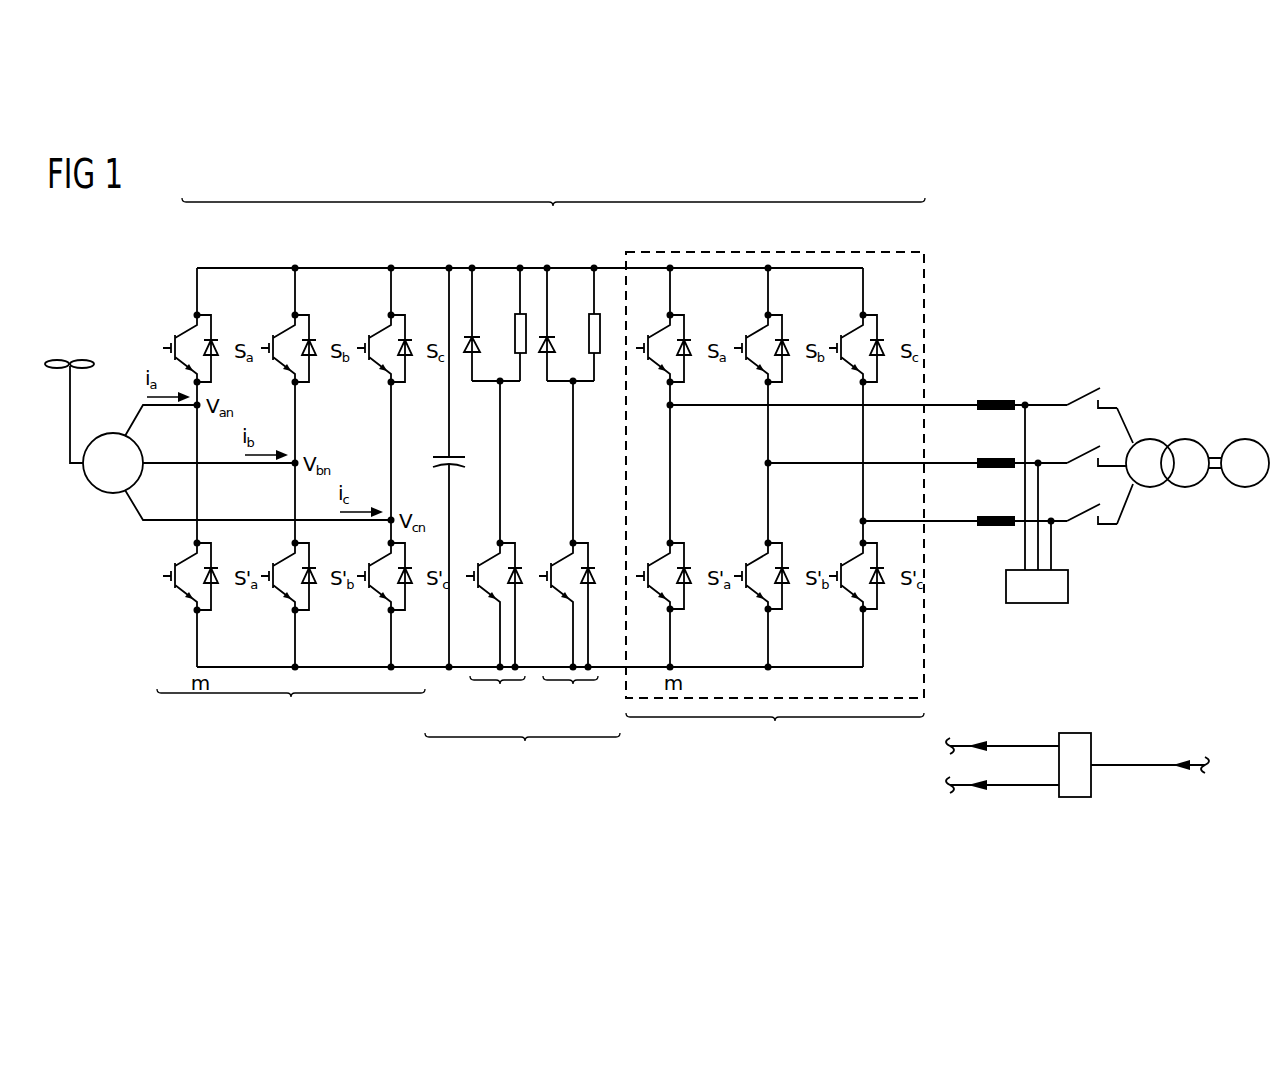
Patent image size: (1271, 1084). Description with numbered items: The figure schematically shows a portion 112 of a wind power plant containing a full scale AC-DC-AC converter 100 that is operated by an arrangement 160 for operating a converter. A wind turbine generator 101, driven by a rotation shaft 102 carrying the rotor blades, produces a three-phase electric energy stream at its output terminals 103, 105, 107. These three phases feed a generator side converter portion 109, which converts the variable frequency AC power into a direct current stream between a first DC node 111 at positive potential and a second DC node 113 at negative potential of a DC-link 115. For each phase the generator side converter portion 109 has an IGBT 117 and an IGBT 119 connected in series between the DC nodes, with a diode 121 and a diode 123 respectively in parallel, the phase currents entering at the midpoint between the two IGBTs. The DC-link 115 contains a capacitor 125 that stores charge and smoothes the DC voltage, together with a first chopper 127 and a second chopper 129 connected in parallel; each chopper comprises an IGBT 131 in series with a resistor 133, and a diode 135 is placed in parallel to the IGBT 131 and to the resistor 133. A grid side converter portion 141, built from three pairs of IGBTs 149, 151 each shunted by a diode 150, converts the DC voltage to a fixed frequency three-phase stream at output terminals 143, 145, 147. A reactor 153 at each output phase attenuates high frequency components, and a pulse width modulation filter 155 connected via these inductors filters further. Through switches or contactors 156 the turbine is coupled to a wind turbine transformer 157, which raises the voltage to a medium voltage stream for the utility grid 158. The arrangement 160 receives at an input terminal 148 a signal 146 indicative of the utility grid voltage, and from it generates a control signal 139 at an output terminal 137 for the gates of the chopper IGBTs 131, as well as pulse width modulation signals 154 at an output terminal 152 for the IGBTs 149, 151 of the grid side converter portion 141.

The AC-DC-AC converter 100 is at (553, 188).
The wind turbine generator 101 is at (93, 485).
The rotation shaft 102 is at (86, 335).
The output terminal 103 is at (126, 437).
The output terminal 105 is at (143, 463).
The output terminal 107 is at (126, 491).
The generator side converter portion 109 is at (291, 711).
The first DC node 111 is at (451, 265).
The portion of a wind power plant 112 is at (1110, 258).
The second DC node 113 is at (449, 670).
The DC-link 115 is at (522, 751).
The IGBT 117 is at (176, 337).
The IGBT 119 is at (173, 589).
The diode 121 is at (214, 338).
The diode 123 is at (213, 592).
The capacitor 125 is at (438, 454).
The first chopper 127 is at (497, 694).
The second chopper 129 is at (570, 694).
The IGBT 131 is at (482, 565).
The resistor 133 is at (523, 355).
The diode 135 is at (478, 334).
The output terminal 137 is at (1054, 744).
The control signal 139 is at (976, 740).
The grid side converter portion 141 is at (775, 505).
The output terminal 143 is at (922, 408).
The output terminal 145 is at (912, 466).
The signal 146 is at (1180, 759).
The output terminal 147 is at (932, 523).
The input terminal 148 is at (1096, 761).
The IGBT 149 is at (648, 337).
The diode 150 is at (685, 338).
The IGBT 151 is at (648, 569).
The output terminal 152 is at (1056, 789).
The reactor 153 is at (983, 400).
The pulse width modulation signals 154 is at (976, 795).
The pulse width modulation filter 155 is at (1044, 604).
The switches or contactors 156 is at (1092, 395).
The wind turbine transformer 157 is at (1146, 439).
The utility grid 158 is at (1242, 439).
The arrangement for operating a converter 160 is at (1076, 800).